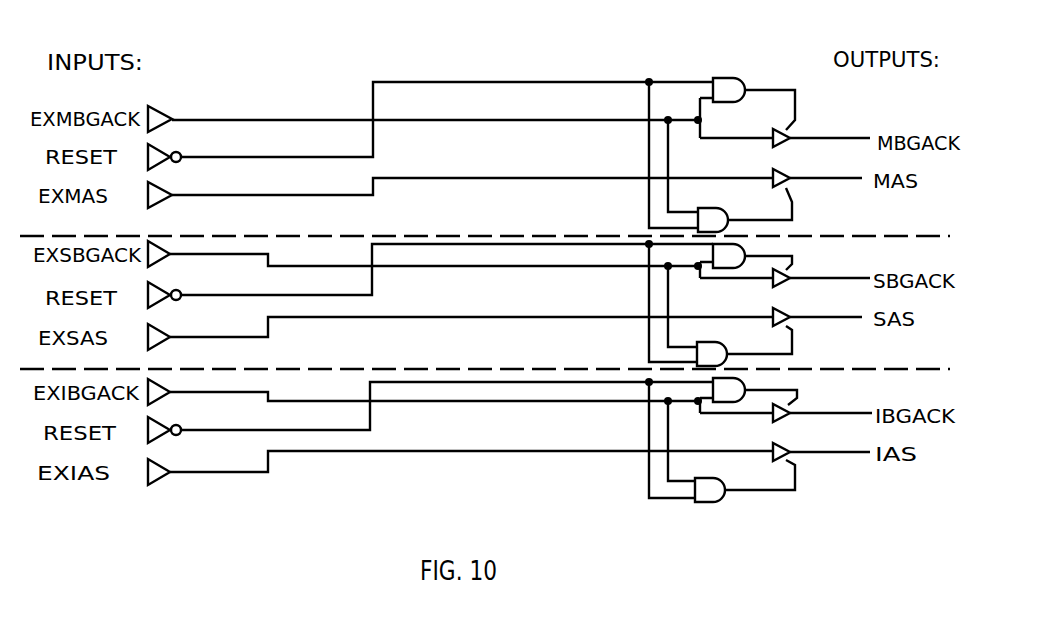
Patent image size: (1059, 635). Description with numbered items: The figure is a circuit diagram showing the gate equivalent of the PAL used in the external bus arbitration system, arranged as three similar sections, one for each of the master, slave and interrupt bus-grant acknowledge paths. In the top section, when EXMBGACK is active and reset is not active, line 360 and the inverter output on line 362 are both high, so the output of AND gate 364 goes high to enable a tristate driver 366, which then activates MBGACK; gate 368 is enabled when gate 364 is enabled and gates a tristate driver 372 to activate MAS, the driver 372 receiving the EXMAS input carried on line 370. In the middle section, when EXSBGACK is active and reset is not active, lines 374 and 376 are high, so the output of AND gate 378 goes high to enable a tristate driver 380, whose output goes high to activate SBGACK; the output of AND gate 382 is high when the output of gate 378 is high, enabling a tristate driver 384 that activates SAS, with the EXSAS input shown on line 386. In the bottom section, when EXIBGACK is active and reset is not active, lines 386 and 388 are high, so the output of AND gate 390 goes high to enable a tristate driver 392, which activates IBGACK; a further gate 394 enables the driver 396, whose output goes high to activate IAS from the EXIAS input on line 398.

The line 360 is at (237, 118).
The line 362 is at (188, 157).
The EXMAS input line 370 is at (407, 177).
The AND gate 364 is at (726, 79).
The tristate driver 366 is at (776, 143).
The gate 368 is at (704, 209).
The tristate driver 372 is at (788, 185).
The line 374 is at (390, 267).
The line 376 is at (541, 245).
The AND gate 378 is at (748, 252).
The tristate driver 380 is at (790, 280).
The AND gate 382 is at (737, 331).
The tristate driver 384 is at (790, 318).
The line 386 is at (371, 317).
The line 388 is at (511, 384).
The AND gate 390 is at (737, 386).
The tristate driver 392 is at (786, 416).
The AND gate 394 is at (708, 496).
The driver 396 is at (790, 455).
The EXIAS input line 398 is at (382, 452).